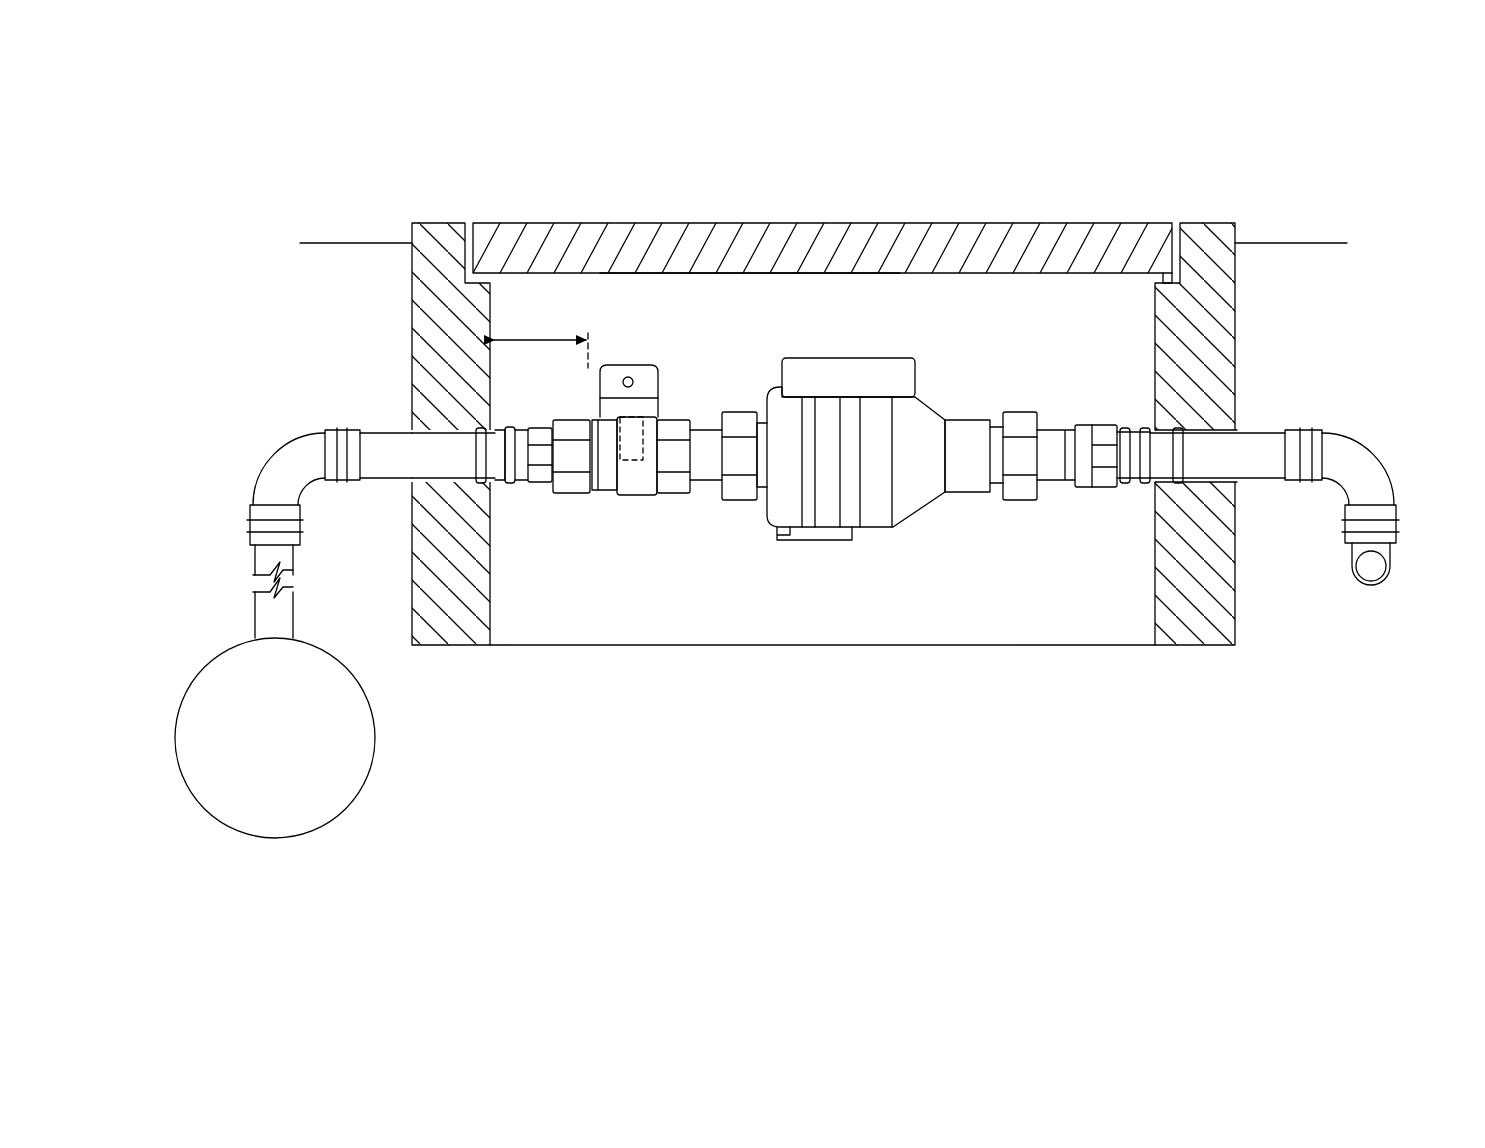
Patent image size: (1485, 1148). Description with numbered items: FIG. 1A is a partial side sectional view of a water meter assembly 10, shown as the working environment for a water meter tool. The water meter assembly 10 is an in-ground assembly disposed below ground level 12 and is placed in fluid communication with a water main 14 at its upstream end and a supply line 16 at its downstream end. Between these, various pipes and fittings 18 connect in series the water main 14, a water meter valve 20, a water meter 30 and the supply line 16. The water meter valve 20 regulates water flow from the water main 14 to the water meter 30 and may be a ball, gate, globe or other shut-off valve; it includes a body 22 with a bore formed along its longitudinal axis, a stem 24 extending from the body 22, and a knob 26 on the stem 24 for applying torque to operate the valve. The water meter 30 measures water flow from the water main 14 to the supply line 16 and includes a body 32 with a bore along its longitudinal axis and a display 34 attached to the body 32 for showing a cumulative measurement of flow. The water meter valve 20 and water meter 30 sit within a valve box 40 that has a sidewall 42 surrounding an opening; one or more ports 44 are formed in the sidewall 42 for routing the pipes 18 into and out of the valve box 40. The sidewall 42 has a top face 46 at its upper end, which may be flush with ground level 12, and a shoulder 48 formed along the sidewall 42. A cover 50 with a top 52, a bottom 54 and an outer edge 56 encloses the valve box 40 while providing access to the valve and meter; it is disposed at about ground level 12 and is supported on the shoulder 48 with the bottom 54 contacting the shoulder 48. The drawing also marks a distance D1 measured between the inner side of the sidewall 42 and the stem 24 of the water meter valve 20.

The water meter assembly 10 is at (1337, 136).
The ground level 12 is at (1278, 242).
The water main 14 is at (175, 745).
The supply line 16 is at (1393, 568).
The pipes and fittings 18 is at (1020, 418).
The water meter valve 20 is at (633, 502).
The body 22 is at (612, 482).
The stem 24 is at (613, 442).
The knob 26 is at (649, 378).
The water meter 30 is at (922, 522).
The body 32 is at (928, 428).
The display 34 is at (838, 375).
The valve box 40 is at (1247, 335).
The sidewall 42 is at (1222, 382).
The ports 44 is at (1215, 428).
The top face 46 is at (1207, 222).
The shoulder 48 is at (1168, 283).
The cover 50 is at (920, 213).
The top 52 is at (718, 222).
The bottom 54 is at (742, 274).
The outer edge 56 is at (478, 258).
The distance D1 is at (541, 337).